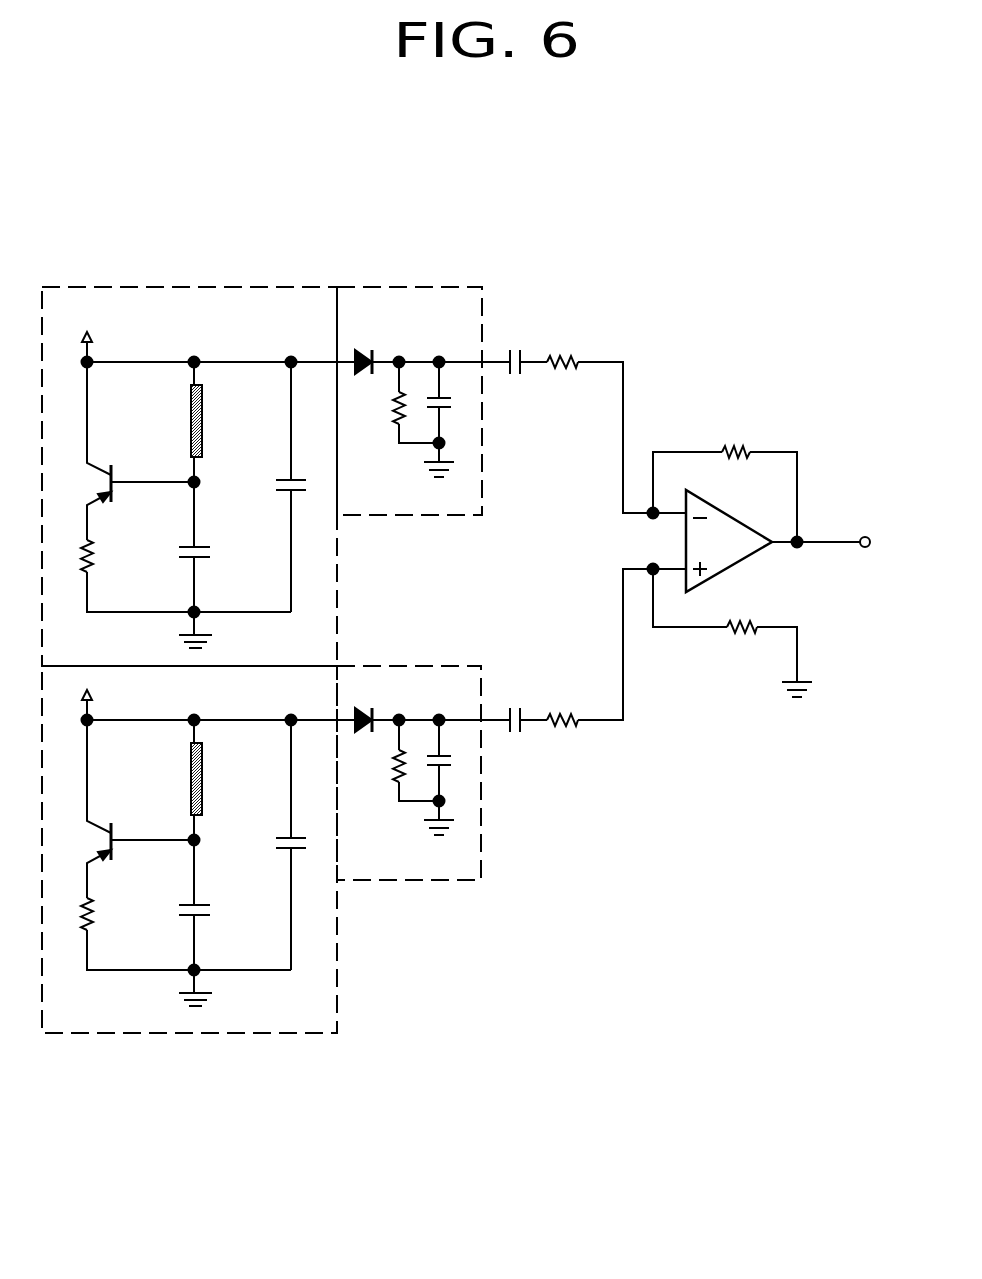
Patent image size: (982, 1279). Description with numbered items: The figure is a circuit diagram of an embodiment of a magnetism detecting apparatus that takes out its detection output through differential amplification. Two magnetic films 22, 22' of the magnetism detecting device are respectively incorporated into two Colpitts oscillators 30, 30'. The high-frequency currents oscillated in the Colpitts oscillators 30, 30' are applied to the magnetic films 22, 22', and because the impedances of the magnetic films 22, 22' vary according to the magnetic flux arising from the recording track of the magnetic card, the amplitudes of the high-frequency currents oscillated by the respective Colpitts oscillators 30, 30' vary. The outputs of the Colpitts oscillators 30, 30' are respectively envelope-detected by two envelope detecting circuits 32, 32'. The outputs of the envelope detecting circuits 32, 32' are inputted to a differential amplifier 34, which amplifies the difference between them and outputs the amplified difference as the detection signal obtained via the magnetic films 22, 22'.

The Colpitts oscillator 30 is at (198, 422).
The magnetic film 22 is at (305, 342).
The envelope detecting circuit 32 is at (521, 355).
The differential amplifier 34 is at (697, 500).
The Colpitts oscillator 30' is at (198, 893).
The magnetic film 22' is at (234, 745).
The envelope detecting circuit 32' is at (423, 822).